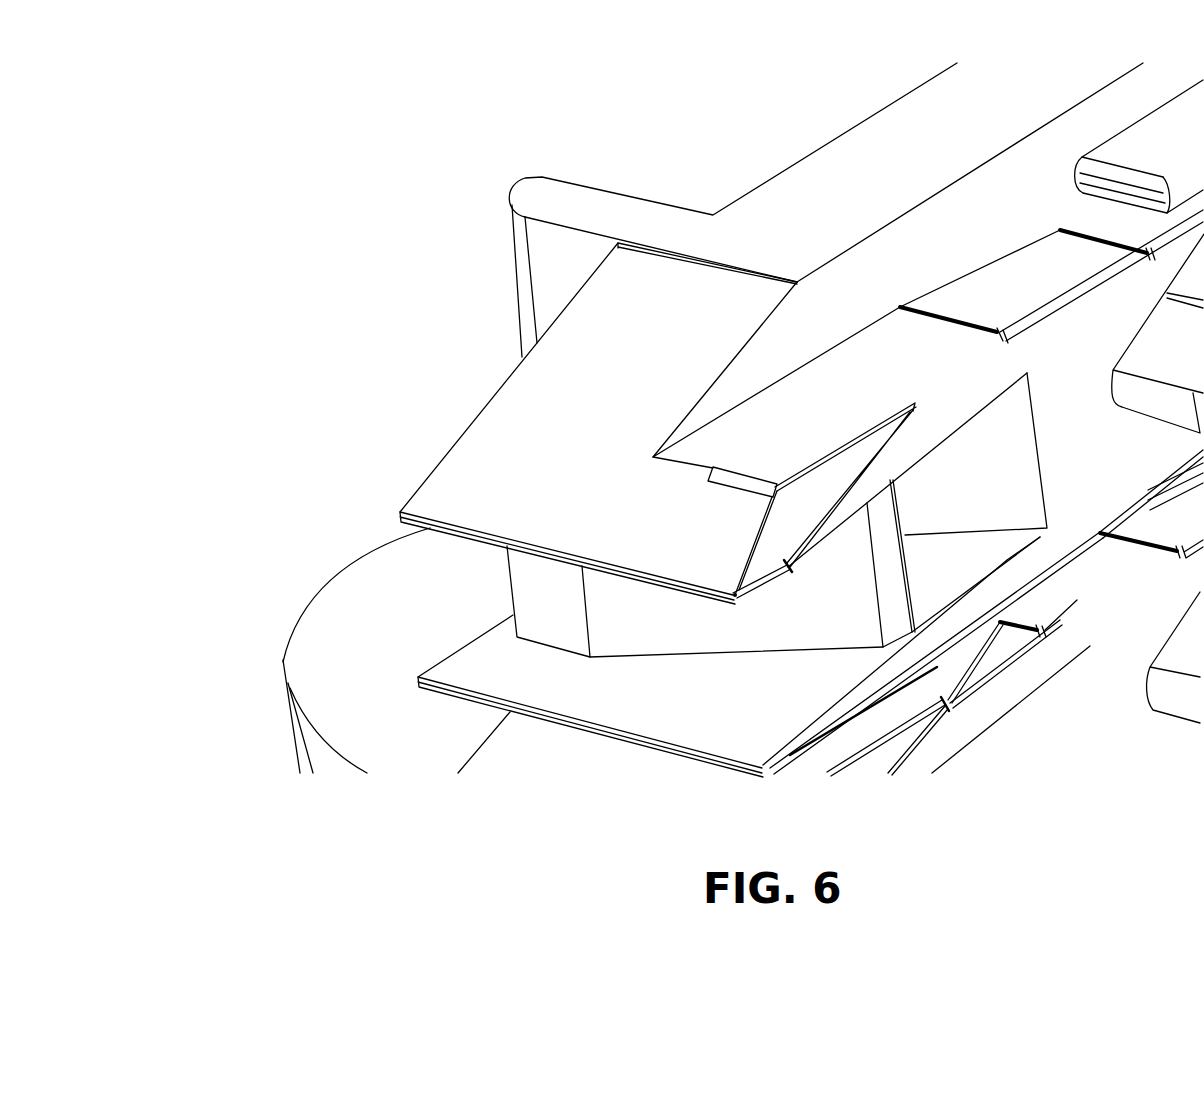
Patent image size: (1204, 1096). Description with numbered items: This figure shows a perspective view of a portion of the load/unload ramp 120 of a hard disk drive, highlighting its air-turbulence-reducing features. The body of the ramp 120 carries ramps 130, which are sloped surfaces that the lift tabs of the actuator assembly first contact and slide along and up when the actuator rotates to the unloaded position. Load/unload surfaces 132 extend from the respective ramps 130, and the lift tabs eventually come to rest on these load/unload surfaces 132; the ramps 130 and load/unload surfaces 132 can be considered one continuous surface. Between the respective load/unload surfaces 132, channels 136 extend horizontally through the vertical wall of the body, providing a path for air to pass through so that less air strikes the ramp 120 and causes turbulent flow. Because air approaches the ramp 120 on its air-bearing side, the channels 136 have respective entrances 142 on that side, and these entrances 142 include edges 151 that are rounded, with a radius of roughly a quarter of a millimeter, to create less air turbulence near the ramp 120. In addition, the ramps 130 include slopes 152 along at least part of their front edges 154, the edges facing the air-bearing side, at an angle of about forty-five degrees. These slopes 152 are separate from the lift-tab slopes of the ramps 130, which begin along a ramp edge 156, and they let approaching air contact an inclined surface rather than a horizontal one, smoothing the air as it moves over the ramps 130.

The ramp 120 is at (445, 97).
The ramps 130 is at (687, 543).
The load/unload surfaces 132 is at (873, 350).
The channels 136 is at (1000, 510).
The entrances 142 is at (1037, 483).
The rounded edges 151 is at (884, 556).
The slopes 152 is at (817, 497).
The front edges 154 is at (885, 443).
The ramp edge 156 is at (428, 530).